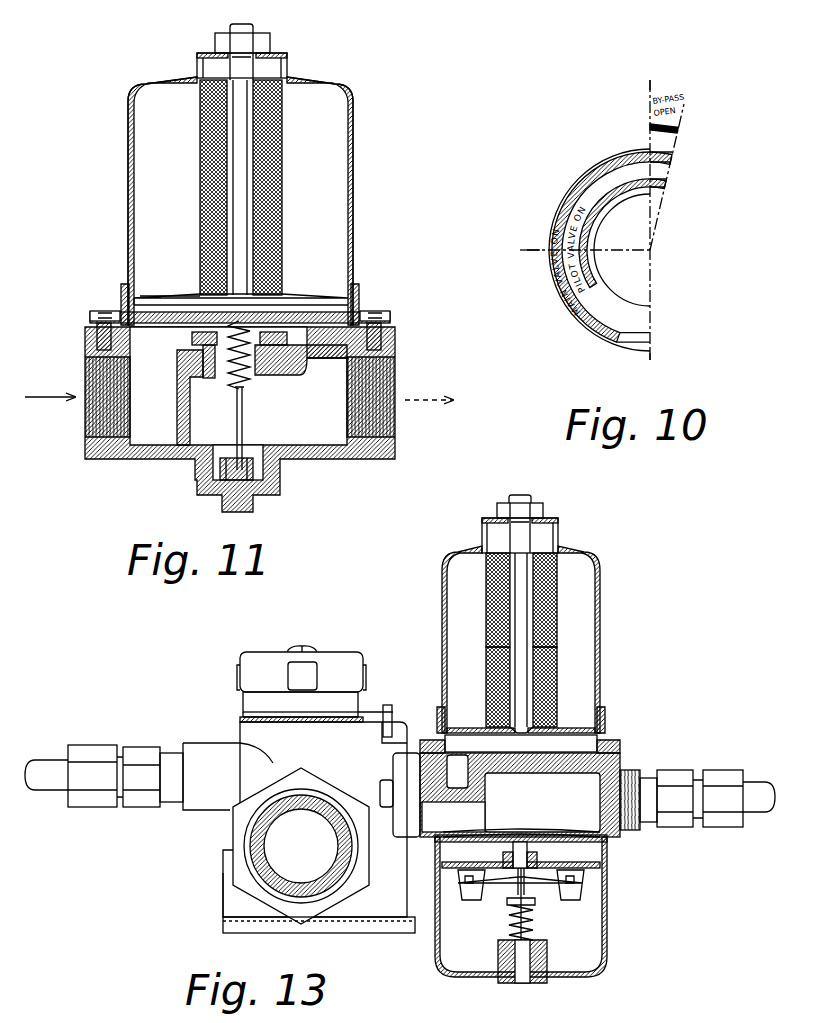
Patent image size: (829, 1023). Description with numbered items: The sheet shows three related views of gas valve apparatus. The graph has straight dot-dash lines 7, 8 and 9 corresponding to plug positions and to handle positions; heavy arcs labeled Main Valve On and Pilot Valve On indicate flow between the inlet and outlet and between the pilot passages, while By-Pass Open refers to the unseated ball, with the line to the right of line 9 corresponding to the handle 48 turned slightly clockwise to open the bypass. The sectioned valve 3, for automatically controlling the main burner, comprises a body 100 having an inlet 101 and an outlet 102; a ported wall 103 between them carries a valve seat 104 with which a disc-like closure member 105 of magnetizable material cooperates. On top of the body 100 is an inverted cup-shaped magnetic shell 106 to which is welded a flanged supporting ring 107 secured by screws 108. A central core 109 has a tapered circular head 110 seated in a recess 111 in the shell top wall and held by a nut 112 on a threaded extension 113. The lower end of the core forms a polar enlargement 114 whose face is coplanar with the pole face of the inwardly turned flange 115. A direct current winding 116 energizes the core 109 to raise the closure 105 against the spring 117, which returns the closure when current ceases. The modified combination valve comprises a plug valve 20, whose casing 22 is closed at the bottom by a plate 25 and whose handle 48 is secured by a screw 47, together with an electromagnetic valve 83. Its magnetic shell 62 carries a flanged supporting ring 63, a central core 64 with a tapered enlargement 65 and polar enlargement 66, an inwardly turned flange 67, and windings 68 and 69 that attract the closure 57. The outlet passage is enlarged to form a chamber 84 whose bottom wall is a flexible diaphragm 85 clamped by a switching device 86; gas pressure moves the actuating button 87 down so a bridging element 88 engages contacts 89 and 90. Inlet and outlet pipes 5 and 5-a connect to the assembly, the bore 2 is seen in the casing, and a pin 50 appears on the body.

In FIG. 11, the valve 3 is at (112, 293).
In FIG. 11, the body 100 is at (317, 460).
In FIG. 11, the inlet 101 is at (84, 427).
In FIG. 11, the outlet 102 is at (395, 377).
In FIG. 11, the ported wall 103 is at (295, 368).
In FIG. 11, the valve seat 104 is at (258, 350).
In FIG. 11, the closure member 105 is at (177, 327).
In FIG. 11, the magnetic shell 106 is at (355, 183).
In FIG. 11, the flanged supporting ring 107 is at (390, 318).
In FIG. 11, the screws 108 is at (380, 303).
In FIG. 11, the central core 109 is at (255, 79).
In FIG. 11, the tapered circular head 110 is at (280, 72).
In FIG. 11, the recess 111 is at (199, 68).
In FIG. 11, the nut 112 is at (270, 43).
In FIG. 11, the threaded extension 113 is at (230, 28).
In FIG. 11, the polar enlargement 114 is at (287, 300).
In FIG. 11, the inwardly turned flange 115 is at (142, 298).
In FIG. 11, the winding 116 is at (283, 135).
In FIG. 11, the spring 117 is at (233, 385).
In FIG. 10, the dot-dash line 7 is at (647, 368).
In FIG. 10, the dot-dash line 8 is at (522, 250).
In FIG. 10, the dot-dash line 9 is at (650, 75).
In FIG. 13, the valve bore 2 is at (237, 843).
In FIG. 13, the inlet pipe 5 is at (45, 788).
In FIG. 13, the outlet pipe 5-a is at (783, 766).
In FIG. 13, the plug valve 20 is at (233, 717).
In FIG. 13, the casing 22 is at (225, 907).
In FIG. 13, the plate 25 is at (315, 935).
In FIG. 13, the screw 47 is at (309, 646).
In FIG. 13, the handle 48 is at (270, 630).
In FIG. 13, the locking pin 50 is at (410, 693).
In FIG. 13, the closure 57 is at (470, 740).
In FIG. 13, the magnetic shell 62 is at (603, 608).
In FIG. 13, the flanged supporting ring 63 is at (622, 745).
In FIG. 13, the central core 64 is at (530, 542).
In FIG. 13, the tapered enlargement 65 is at (563, 536).
In FIG. 13, the polar enlargement 66 is at (537, 733).
In FIG. 13, the inwardly turned flange 67 is at (590, 733).
In FIG. 13, the winding 68 is at (557, 605).
In FIG. 13, the winding 69 is at (557, 685).
In FIG. 13, the electromagnetic valve 83 is at (630, 720).
In FIG. 13, the chamber 84 is at (520, 795).
In FIG. 13, the flexible diaphragm 85 is at (570, 832).
In FIG. 13, the switching device 86 is at (615, 920).
In FIG. 13, the actuating button 87 is at (528, 843).
In FIG. 13, the bridging element 88 is at (580, 883).
In FIG. 13, the contact 89 is at (567, 900).
In FIG. 13, the contact 90 is at (473, 900).